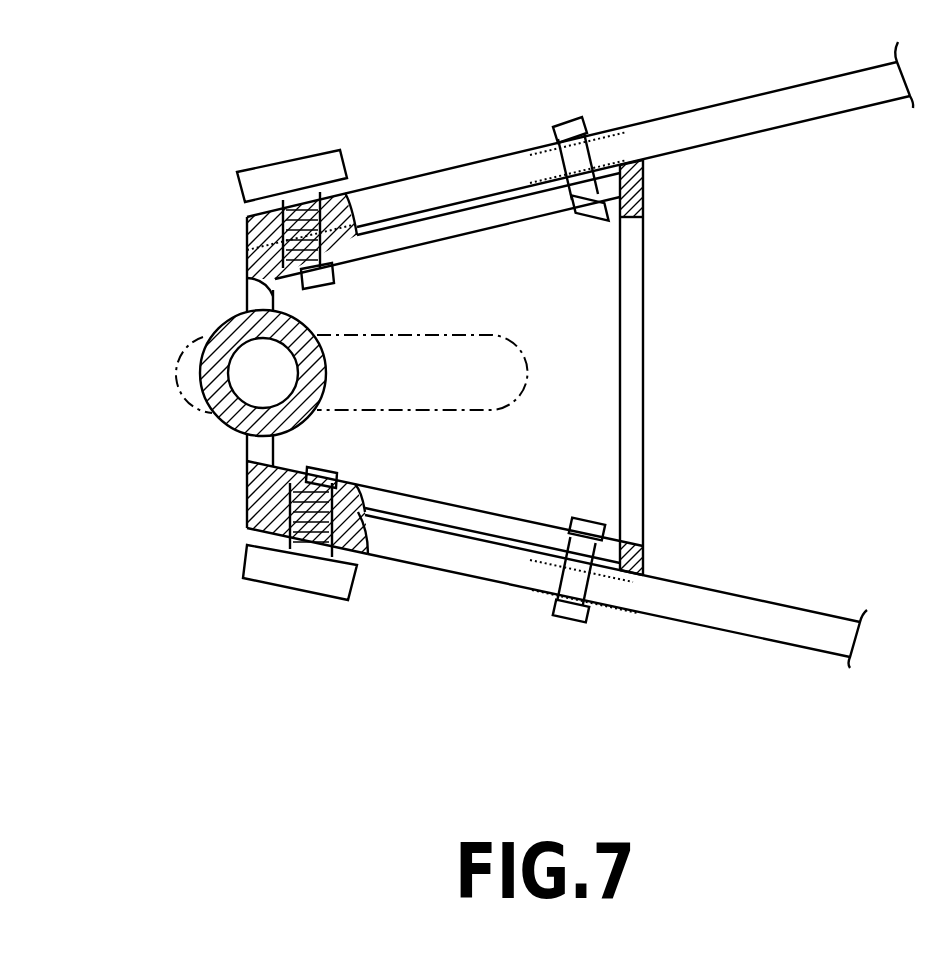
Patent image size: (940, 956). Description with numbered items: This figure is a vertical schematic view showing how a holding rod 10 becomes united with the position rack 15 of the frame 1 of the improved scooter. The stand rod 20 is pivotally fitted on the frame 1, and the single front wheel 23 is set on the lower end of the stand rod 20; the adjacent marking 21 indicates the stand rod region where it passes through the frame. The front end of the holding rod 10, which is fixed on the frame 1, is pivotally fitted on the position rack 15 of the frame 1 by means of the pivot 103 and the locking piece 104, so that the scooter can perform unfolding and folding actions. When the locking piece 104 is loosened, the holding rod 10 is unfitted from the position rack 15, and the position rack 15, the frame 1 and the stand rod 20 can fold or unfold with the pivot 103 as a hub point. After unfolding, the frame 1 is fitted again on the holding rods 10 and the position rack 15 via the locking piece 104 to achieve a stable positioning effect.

The frame 1 is at (213, 367).
The holding rod 10 is at (805, 90).
The position rack 15 is at (637, 358).
The stand rod 20 is at (217, 319).
The shaft bore 21 is at (252, 362).
The front wheel 23 is at (458, 402).
The pivot 103 is at (558, 138).
The locking piece 104 is at (308, 172).